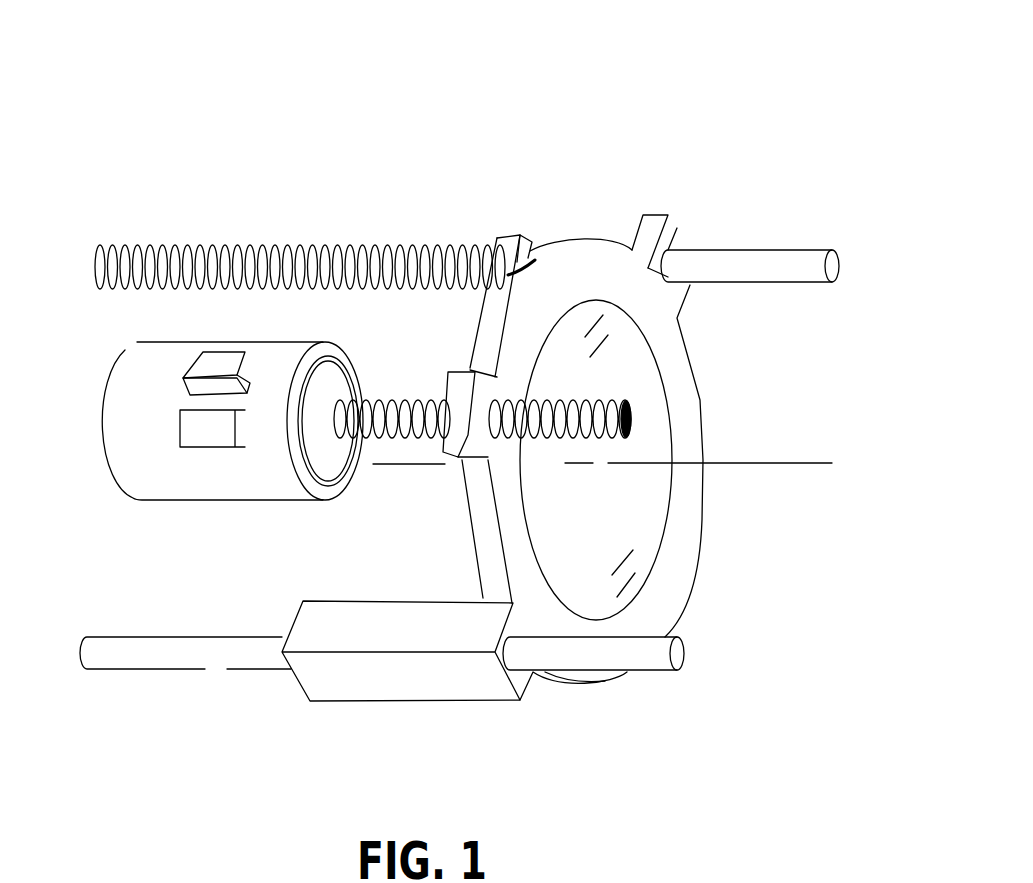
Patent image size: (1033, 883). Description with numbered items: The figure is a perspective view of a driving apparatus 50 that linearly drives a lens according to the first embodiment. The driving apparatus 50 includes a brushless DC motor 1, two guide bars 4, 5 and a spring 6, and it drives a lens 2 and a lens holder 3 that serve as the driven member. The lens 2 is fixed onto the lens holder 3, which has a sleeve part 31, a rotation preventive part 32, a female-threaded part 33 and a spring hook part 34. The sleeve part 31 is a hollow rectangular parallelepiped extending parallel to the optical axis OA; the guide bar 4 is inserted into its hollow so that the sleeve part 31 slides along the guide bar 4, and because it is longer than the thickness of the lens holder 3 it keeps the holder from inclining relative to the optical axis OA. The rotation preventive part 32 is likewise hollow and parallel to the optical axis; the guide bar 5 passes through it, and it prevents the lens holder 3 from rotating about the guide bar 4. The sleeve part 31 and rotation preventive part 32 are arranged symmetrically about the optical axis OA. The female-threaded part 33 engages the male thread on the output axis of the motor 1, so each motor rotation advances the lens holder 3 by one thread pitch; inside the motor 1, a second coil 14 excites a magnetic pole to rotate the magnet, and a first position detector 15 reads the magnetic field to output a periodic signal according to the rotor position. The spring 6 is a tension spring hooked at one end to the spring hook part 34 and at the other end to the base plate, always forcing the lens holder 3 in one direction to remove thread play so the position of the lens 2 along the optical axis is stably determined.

The driving apparatus 50 is at (376, 41).
The brushless DC motor 1 is at (194, 437).
The second coil 14 is at (215, 363).
The first position detector 15 is at (197, 444).
The lens 2 is at (655, 492).
The lens holder 3 is at (550, 466).
The sleeve part 31 is at (420, 670).
The rotation preventive part 32 is at (668, 215).
The female-threaded part 33 is at (462, 432).
The spring hook part 34 is at (515, 237).
The guide bar 4 is at (235, 650).
The guide bar 5 is at (745, 262).
The spring 6 is at (322, 247).
The optical axis OA is at (629, 466).